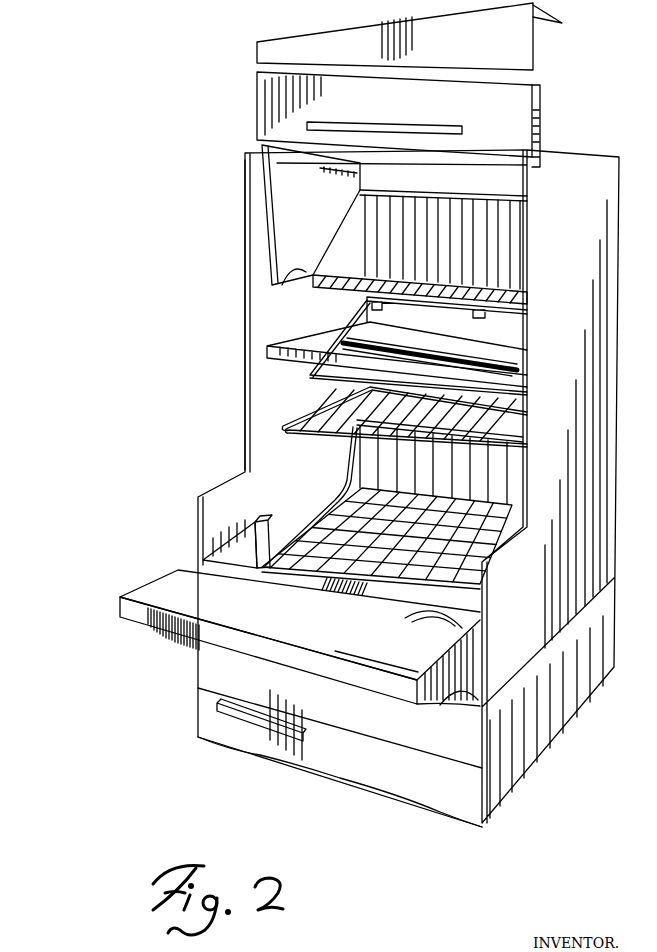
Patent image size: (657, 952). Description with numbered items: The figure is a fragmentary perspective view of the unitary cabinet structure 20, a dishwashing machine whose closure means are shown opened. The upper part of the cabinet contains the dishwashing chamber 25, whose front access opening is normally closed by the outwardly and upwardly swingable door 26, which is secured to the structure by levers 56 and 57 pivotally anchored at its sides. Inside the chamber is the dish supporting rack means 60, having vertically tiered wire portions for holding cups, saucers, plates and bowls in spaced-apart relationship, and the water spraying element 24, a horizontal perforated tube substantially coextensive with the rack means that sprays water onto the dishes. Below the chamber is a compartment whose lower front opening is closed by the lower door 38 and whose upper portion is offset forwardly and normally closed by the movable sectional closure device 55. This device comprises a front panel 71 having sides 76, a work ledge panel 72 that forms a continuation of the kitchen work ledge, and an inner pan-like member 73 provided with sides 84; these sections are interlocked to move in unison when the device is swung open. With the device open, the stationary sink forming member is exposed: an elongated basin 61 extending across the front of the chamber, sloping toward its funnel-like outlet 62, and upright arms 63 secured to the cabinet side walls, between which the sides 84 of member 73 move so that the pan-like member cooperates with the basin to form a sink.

The unitary cabinet structure 20 is at (245, 262).
The water spraying element 24 is at (502, 370).
The dishwashing chamber 25 is at (272, 447).
The door 26 is at (265, 92).
The lower door 38 is at (345, 770).
The movable sectional closure device 55 is at (108, 612).
The lever 56 is at (540, 118).
The lever 57 is at (288, 285).
The dish supporting rack means 60 is at (267, 348).
The elongated basin 61 is at (370, 597).
The funnel-like outlet 62 is at (407, 618).
The upright arms 63 is at (268, 532).
The front panel 71 is at (430, 702).
The work ledge panel 72 is at (172, 588).
The inner pan-like member 73 is at (315, 590).
The sides 76 is at (472, 700).
The sides 84 is at (248, 545).